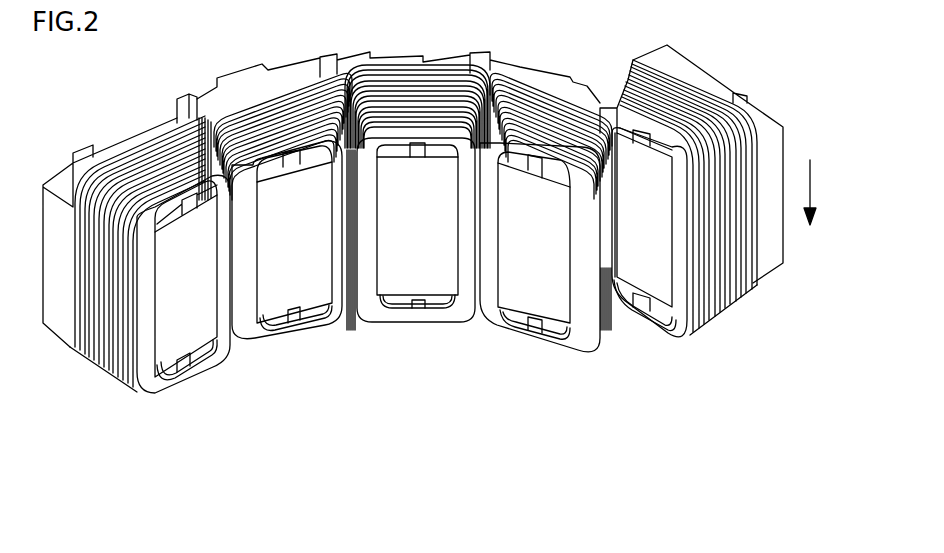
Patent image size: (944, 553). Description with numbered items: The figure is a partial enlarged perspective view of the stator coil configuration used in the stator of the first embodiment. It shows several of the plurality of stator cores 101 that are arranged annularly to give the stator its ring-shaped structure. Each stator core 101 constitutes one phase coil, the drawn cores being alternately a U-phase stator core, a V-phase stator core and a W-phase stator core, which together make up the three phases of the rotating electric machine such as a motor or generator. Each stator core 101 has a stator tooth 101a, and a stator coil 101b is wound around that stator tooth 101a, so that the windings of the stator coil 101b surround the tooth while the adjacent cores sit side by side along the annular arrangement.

The stator core 101 is at (196, 395).
The stator tooth 101a is at (656, 262).
The stator coil 101b is at (717, 285).